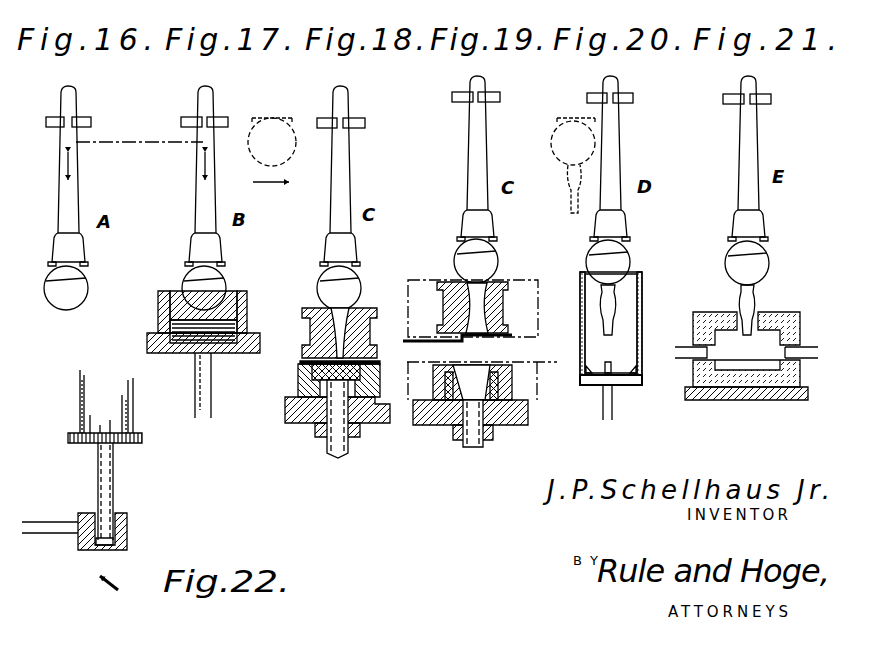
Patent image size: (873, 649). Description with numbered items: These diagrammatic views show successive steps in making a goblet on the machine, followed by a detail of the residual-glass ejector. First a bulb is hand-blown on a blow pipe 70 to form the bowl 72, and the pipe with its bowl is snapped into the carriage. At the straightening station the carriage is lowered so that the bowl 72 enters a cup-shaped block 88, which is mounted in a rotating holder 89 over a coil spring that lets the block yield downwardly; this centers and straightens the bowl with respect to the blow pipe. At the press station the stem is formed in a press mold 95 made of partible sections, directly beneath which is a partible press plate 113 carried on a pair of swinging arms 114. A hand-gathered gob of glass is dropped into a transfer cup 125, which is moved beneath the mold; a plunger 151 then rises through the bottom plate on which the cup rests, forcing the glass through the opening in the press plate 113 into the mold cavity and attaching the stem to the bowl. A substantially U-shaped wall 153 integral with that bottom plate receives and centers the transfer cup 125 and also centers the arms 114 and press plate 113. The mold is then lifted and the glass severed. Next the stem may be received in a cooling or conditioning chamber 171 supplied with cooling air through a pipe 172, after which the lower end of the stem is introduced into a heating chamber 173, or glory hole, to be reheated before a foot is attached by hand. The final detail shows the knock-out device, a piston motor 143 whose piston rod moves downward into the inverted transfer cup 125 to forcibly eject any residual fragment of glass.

In FIG. 16, the blow pipe 70 is at (76, 192).
In FIG. 17, the blow pipe 70 is at (204, 176).
In FIG. 18, the blow pipe 70 is at (340, 163).
In FIG. 19, the blow pipe 70 is at (476, 158).
In FIG. 20, the blow pipe 70 is at (612, 168).
In FIG. 21, the blow pipe 70 is at (747, 158).
In FIG. 16, the bowl 72 is at (88, 290).
In FIG. 17, the bowl 72 is at (204, 288).
In FIG. 18, the bowl 72 is at (339, 288).
In FIG. 19, the bowl 72 is at (493, 264).
In FIG. 20, the bowl 72 is at (608, 262).
In FIG. 21, the bowl 72 is at (767, 267).
In FIG. 17, the cup-shaped block 88 is at (228, 299).
In FIG. 17, the holder 89 is at (246, 318).
In FIG. 18, the press mold 95 is at (357, 311).
In FIG. 19, the press mold 95 is at (510, 280).
In FIG. 19, the press plate 113 is at (483, 358).
In FIG. 18, the arms 114 is at (300, 368).
In FIG. 19, the arms 114 is at (510, 385).
In FIG. 18, the transfer cup 125 is at (300, 402).
In FIG. 19, the transfer cup 125 is at (457, 402).
In FIG. 22, the transfer cup 125 is at (125, 525).
In FIG. 22, the piston motor 143 is at (160, 402).
In FIG. 18, the plunger 151 is at (340, 458).
In FIG. 19, the plunger 151 is at (472, 447).
In FIG. 19, the wall 153 is at (500, 418).
In FIG. 20, the cooling or conditioning chamber 171 is at (640, 288).
In FIG. 20, the pipe 172 is at (612, 403).
In FIG. 21, the heating chamber 173 is at (780, 318).